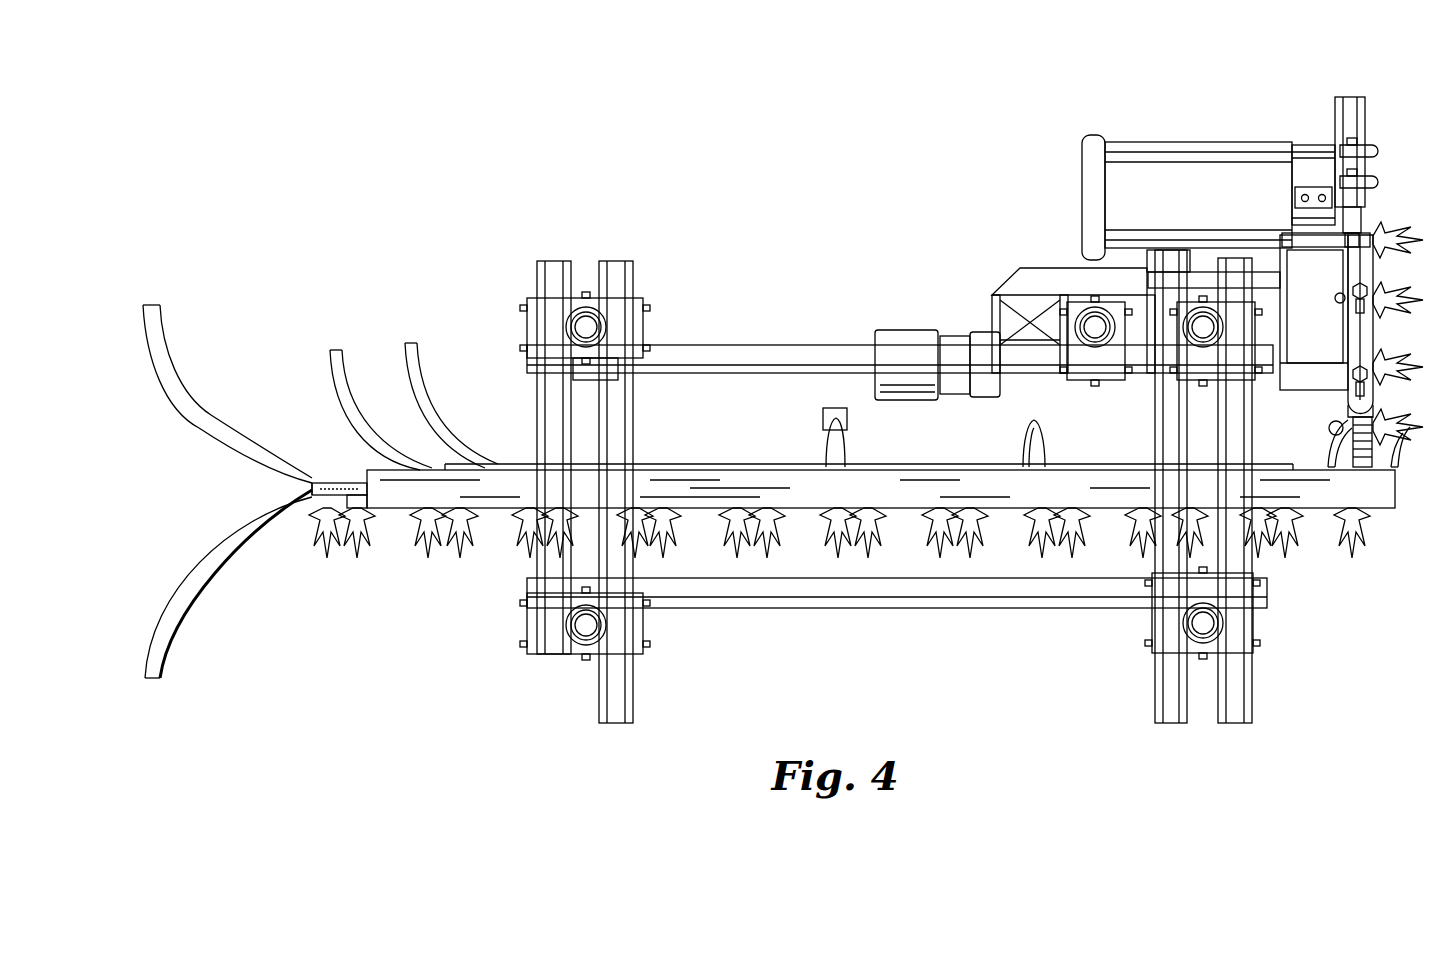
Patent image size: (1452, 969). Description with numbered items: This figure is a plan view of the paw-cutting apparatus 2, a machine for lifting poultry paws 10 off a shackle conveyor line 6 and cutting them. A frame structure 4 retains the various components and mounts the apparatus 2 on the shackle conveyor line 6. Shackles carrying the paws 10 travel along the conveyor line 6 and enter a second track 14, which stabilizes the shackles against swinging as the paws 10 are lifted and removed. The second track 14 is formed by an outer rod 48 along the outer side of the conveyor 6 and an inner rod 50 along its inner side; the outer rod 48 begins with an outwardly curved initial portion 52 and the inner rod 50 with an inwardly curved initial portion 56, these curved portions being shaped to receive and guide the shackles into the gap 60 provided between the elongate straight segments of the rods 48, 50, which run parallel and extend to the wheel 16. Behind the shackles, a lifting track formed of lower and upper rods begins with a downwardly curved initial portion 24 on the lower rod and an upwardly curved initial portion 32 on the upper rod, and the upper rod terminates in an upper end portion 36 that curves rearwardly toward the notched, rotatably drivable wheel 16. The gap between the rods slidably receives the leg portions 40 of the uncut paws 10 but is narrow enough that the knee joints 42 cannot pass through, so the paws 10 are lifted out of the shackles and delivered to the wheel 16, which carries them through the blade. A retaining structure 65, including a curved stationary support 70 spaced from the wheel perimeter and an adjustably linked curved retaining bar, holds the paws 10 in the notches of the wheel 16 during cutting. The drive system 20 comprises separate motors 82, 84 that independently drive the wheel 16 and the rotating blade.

The paw-cutting apparatus 2 is at (803, 292).
The frame structure 4 is at (708, 352).
The shackle conveyor line 6 is at (500, 500).
The paws 10 is at (357, 560).
The second track 14 is at (340, 485).
The notched, rotatably drivable wheel 16 is at (1374, 455).
The drive system 20 is at (1072, 263).
The downwardly curved initial portion 24 is at (420, 365).
The upwardly curved initial portion 32 is at (347, 368).
The upper end portion 36 is at (1330, 462).
The leg portions 40 is at (1373, 416).
The knee joints 42 is at (1330, 425).
The outer rod 48 is at (352, 500).
The inner rod 50 is at (232, 440).
The outwardly curved initial portion 52 is at (186, 587).
The inwardly curved initial portion 56 is at (160, 342).
The gap 60 is at (310, 490).
The retaining structure 65 is at (1362, 272).
The curved stationary support 70 is at (1367, 291).
The motor 82 is at (897, 332).
The motor 84 is at (1188, 155).